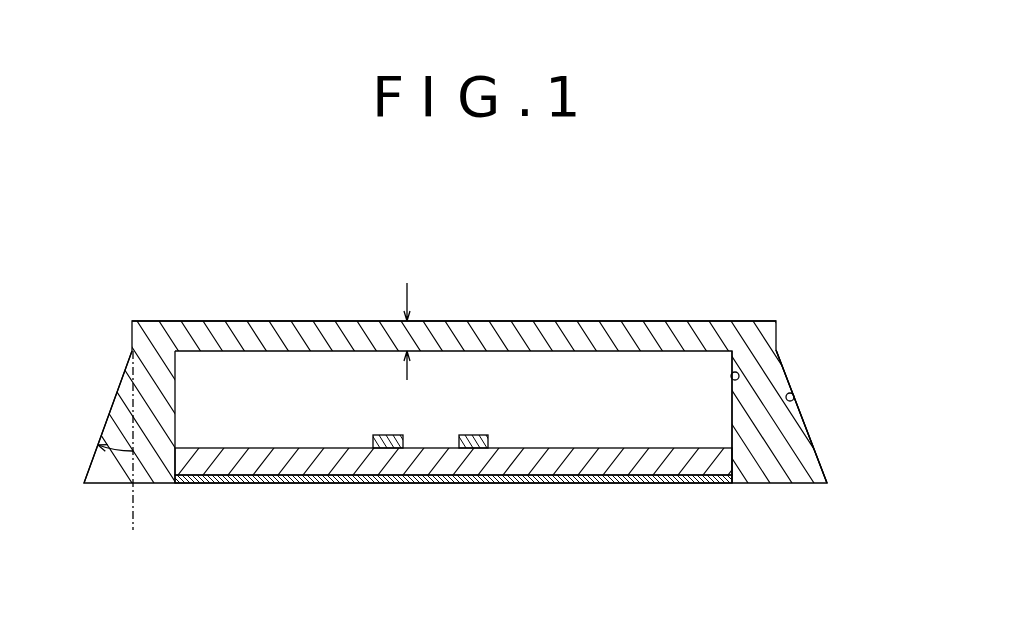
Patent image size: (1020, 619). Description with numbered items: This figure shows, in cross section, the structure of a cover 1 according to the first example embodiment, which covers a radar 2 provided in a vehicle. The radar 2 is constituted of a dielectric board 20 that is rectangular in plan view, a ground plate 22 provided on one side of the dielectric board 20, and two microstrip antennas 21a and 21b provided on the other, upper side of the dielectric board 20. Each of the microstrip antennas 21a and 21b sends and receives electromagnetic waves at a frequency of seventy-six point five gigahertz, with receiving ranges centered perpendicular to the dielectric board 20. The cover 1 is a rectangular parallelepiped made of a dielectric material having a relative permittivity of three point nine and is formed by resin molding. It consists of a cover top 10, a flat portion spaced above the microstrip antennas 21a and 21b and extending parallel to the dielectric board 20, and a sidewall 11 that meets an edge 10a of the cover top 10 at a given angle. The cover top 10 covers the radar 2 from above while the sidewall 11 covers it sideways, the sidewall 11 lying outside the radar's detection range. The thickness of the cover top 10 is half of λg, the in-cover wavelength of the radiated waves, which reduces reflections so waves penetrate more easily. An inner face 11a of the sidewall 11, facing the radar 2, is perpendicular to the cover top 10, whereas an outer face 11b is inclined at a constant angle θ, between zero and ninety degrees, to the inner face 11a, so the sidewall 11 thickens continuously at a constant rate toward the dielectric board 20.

The cover 1 is at (742, 321).
The cover top 10 is at (588, 330).
The edge of the cover top 10a is at (757, 348).
The sidewall 11 is at (118, 420).
The inner face of the sidewall 11a is at (735, 376).
The outer face of the sidewall 11b is at (790, 397).
The radar 2 is at (640, 485).
The dielectric board 20 is at (518, 470).
The microstrip antenna 21a is at (387, 450).
The microstrip antenna 21b is at (472, 450).
The ground plate 22 is at (558, 482).